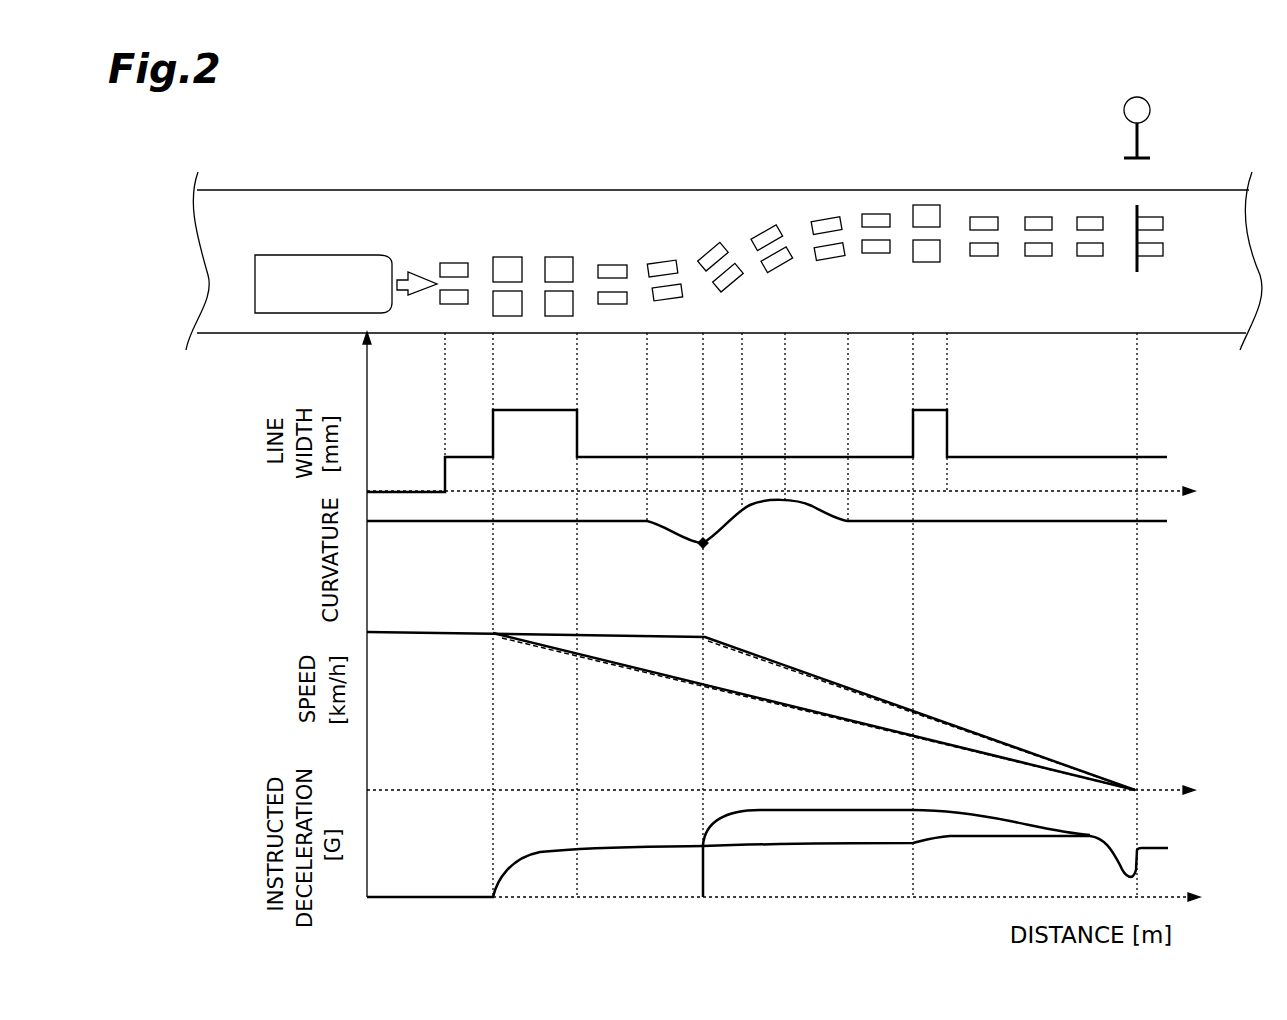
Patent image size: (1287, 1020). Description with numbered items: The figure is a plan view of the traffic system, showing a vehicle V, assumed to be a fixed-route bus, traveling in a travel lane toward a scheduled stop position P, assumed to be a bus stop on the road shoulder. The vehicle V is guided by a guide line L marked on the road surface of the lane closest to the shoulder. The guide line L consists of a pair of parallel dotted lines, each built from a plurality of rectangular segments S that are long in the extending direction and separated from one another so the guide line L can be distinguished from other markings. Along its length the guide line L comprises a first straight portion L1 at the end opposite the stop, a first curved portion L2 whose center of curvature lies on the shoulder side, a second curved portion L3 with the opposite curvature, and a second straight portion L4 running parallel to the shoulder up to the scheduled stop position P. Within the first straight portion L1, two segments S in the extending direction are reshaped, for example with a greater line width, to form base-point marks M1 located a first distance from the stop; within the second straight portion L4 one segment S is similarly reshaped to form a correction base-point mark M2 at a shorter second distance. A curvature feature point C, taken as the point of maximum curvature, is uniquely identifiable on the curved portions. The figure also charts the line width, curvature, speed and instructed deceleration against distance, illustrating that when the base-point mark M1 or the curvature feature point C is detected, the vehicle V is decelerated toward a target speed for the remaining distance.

The vehicle V is at (328, 253).
The base-point mark M1 is at (510, 255).
The guide line L is at (613, 262).
The segment S is at (713, 247).
The correction base-point mark M2 is at (923, 205).
The scheduled stop position P is at (1133, 215).
The curvature feature point C is at (767, 538).
The first straight portion L1 is at (647, 378).
The first curved portion L2 is at (742, 378).
The second curved portion L3 is at (742, 378).
The second straight portion L4 is at (1137, 378).